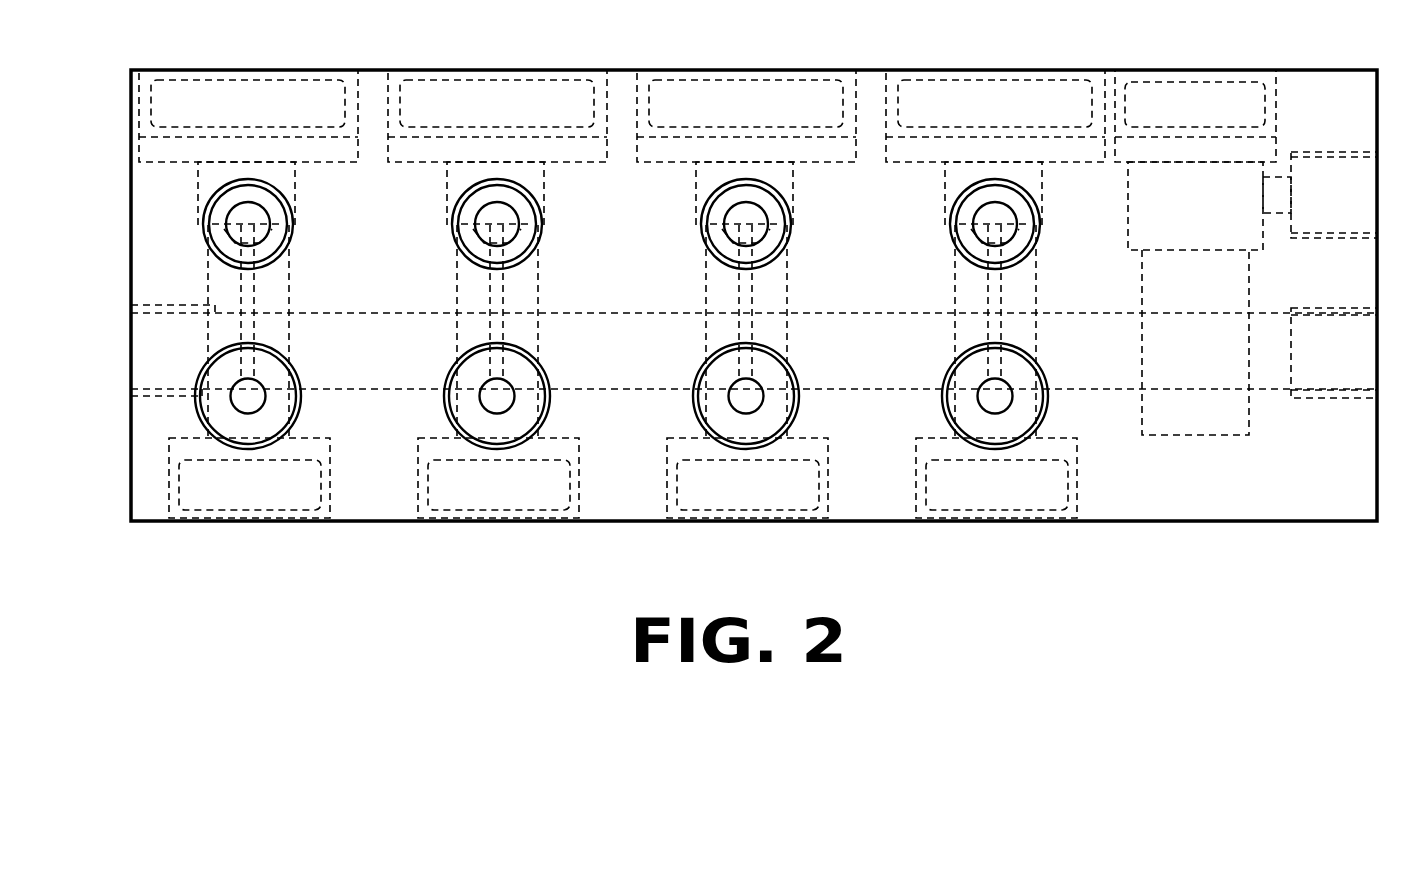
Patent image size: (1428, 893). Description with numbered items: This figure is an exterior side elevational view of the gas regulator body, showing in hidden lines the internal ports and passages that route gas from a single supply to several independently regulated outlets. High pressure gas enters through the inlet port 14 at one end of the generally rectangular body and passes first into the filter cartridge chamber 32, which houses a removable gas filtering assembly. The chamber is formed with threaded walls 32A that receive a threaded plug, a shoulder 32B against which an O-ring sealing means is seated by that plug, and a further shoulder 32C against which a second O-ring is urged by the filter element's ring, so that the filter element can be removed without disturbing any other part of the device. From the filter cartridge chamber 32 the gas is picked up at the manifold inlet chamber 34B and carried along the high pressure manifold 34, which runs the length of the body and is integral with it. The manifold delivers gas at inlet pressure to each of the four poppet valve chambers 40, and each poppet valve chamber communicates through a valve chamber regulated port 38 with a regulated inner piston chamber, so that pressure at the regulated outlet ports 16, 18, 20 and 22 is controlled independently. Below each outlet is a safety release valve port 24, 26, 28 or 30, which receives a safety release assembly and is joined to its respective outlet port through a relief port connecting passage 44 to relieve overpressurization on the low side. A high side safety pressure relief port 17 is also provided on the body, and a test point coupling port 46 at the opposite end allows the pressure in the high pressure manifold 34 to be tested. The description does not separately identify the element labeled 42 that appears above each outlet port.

The inlet port 14 is at (1352, 162).
The regulated outlet port 16 is at (952, 231).
The high side safety pressure relief port 17 is at (1350, 390).
The regulated outlet port 18 is at (703, 232).
The regulated outlet port 20 is at (453, 230).
The regulated outlet port 22 is at (204, 230).
The safety release valve port 24 is at (1049, 401).
The safety release valve port 26 is at (801, 401).
The safety release valve port 28 is at (552, 401).
The safety release valve port 30 is at (303, 401).
The filter cartridge chamber 32 is at (1210, 82).
The threaded walls of filter cartridge chamber 32A is at (1130, 95).
The shoulder of filter cartridge chamber 32B is at (1128, 148).
The shoulder of filter cartridge chamber 32C is at (1262, 242).
The high pressure manifold 34 is at (666, 315).
The manifold inlet chamber 34B is at (1142, 388).
The valve chamber regulated port 38 is at (1015, 212).
The poppet valve chamber 40 is at (290, 298).
The mounting bracket 42 is at (318, 152).
The relief port connecting passage 44 is at (260, 322).
The test point coupling port 46 is at (165, 388).